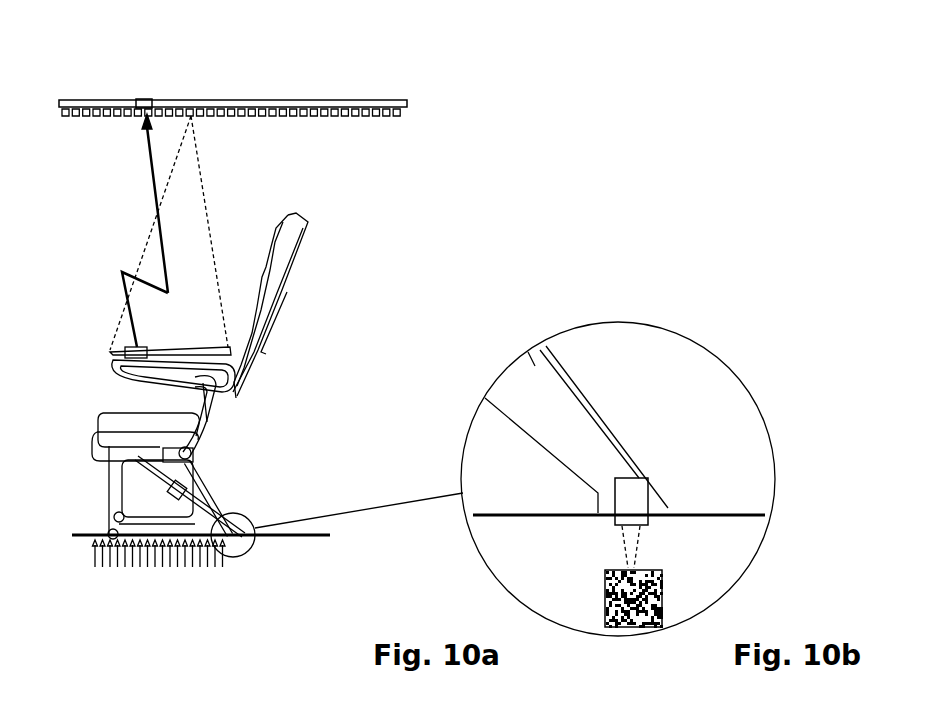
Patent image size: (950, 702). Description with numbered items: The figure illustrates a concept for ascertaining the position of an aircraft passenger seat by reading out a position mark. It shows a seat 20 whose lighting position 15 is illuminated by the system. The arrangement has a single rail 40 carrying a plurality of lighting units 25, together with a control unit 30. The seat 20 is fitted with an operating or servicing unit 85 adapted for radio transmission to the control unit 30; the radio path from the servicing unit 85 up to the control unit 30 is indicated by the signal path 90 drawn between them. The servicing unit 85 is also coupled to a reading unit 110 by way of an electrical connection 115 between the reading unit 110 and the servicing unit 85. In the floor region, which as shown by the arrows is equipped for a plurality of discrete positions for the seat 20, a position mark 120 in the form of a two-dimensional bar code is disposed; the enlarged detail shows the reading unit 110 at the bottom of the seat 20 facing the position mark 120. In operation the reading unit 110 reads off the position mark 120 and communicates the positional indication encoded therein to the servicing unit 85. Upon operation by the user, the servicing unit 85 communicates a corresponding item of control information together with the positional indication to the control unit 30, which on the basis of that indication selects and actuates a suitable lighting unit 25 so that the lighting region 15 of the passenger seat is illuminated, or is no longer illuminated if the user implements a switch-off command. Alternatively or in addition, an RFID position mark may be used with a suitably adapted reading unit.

In FIG. 10A, the lighting position 15 is at (178, 344).
In FIG. 10A, the seat 20 is at (308, 242).
In FIG. 10B, the seat 20 is at (562, 368).
In FIG. 10A, the lighting unit 25 is at (360, 117).
In FIG. 10A, the control unit 30 is at (146, 100).
In FIG. 10A, the rail 40 is at (407, 101).
In FIG. 10A, the operating or servicing unit 85 is at (114, 354).
In FIG. 10A, the optical signal path 90 is at (152, 167).
In FIG. 10B, the reading unit 110 is at (650, 498).
In FIG. 10B, the electrical connection 115 is at (533, 367).
In FIG. 10B, the position mark 120 is at (662, 603).